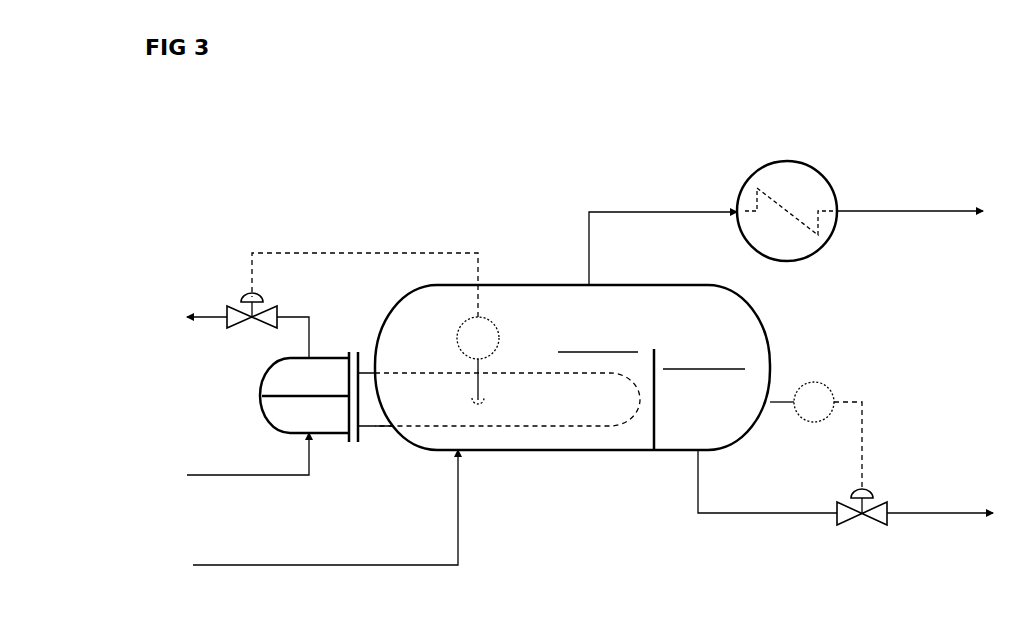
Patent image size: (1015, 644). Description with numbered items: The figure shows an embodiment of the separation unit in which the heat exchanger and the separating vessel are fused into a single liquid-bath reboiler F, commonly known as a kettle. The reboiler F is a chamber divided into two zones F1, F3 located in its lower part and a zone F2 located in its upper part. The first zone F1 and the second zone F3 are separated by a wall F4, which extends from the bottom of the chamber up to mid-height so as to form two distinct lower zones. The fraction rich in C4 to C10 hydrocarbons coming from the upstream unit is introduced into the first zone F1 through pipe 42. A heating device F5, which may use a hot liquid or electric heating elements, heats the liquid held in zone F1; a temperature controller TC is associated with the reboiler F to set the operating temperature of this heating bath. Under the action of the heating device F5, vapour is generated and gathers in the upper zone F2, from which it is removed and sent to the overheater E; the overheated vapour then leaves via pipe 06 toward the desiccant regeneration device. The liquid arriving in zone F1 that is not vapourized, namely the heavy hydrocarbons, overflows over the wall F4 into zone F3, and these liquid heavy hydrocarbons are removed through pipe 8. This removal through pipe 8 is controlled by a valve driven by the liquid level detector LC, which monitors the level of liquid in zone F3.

The liquid-bath reboiler F is at (575, 367).
The overheater E is at (787, 198).
The pipe 06 is at (910, 197).
The first zone F1 is at (582, 408).
The upper zone F2 is at (550, 318).
The second zone F3 is at (728, 402).
The wall F4 is at (653, 430).
The heating device F5 is at (292, 377).
The pipe 8 is at (940, 501).
The pipe 42 is at (325, 507).
The temperature controller TC is at (375, 328).
The liquid level detector LC is at (816, 436).